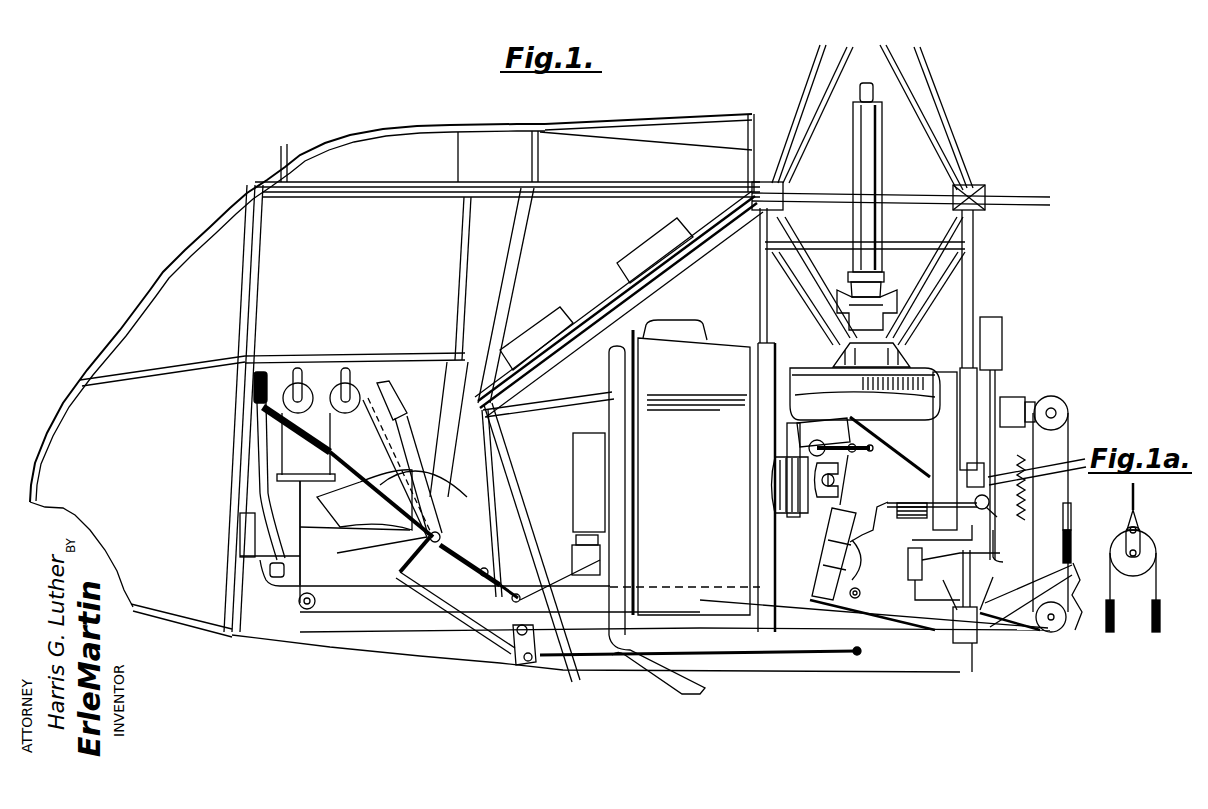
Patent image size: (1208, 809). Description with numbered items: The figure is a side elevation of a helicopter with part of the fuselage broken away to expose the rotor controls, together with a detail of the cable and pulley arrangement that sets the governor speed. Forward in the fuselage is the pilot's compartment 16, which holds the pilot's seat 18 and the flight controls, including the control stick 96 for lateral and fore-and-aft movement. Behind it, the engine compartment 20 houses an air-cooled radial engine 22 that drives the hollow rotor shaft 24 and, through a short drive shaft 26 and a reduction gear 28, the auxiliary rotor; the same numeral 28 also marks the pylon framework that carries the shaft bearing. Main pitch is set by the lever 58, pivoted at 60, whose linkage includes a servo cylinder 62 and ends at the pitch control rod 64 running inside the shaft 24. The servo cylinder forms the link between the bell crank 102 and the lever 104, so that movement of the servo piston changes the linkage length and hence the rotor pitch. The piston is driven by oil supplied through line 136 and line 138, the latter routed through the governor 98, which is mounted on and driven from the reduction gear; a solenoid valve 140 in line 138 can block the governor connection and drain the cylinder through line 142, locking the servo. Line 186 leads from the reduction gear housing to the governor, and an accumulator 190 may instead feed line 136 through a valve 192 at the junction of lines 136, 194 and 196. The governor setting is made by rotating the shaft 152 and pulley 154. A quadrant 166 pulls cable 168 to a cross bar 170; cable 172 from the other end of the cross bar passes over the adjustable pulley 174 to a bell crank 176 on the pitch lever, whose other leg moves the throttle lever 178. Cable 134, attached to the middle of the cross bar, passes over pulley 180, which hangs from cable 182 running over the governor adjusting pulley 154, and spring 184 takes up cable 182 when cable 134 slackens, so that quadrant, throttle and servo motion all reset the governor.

In FIG. 1, the pilot's compartment 16 is at (203, 267).
In FIG. 1, the pilot's seat 18 is at (492, 355).
In FIG. 1, the engine compartment 20 is at (495, 620).
In FIG. 1, the air-cooled radial engine 22 is at (713, 360).
In FIG. 1, the rotor shaft 24 is at (883, 142).
In FIG. 1, the short drive shaft 26 is at (841, 472).
In FIG. 1, the reduction gear 28 is at (930, 80).
In FIG. 1, the main pitch control lever 58 is at (378, 500).
In FIG. 1, the pivot 60 is at (424, 557).
In FIG. 1, the servo cylinder 62 is at (830, 563).
In FIG. 1, the pitch control rod 64 is at (860, 93).
In FIG. 1, the control stick 96 is at (258, 456).
In FIG. 1, the governor 98 is at (1020, 397).
In FIG. 1, the bell crank 102 is at (855, 600).
In FIG. 1, the lever 104 is at (865, 437).
In FIG. 1, the cable 134 is at (302, 572).
In FIG. 1A, the cable 134 is at (1156, 578).
In FIG. 1, the line 136 is at (914, 498).
In FIG. 1, the line 138 is at (939, 533).
In FIG. 1, the solenoid actuated valve 140 is at (940, 574).
In FIG. 1, the line 142 is at (942, 530).
In FIG. 1, the shaft 152 is at (1057, 412).
In FIG. 1, the pulley 154 is at (1052, 398).
In FIG. 1, the quadrant 166 is at (303, 382).
In FIG. 1, the cable 168 is at (280, 445).
In FIG. 1, the cross bar 170 is at (285, 481).
In FIG. 1, the cable 172 is at (340, 432).
In FIG. 1, the adjustable pulley 174 is at (350, 390).
In FIG. 1, the bell crank 176 is at (505, 582).
In FIG. 1, the throttle lever 178 is at (568, 560).
In FIG. 1A, the pulley 180 is at (1142, 545).
In FIG. 1A, the cable 182 is at (1137, 495).
In FIG. 1, the spring 184 is at (1027, 498).
In FIG. 1, the line 186 is at (960, 468).
In FIG. 1, the accumulator 190 is at (1003, 335).
In FIG. 1, the valve 192 is at (932, 510).
In FIG. 1, the line 194 is at (967, 497).
In FIG. 1, the line 196 is at (996, 382).